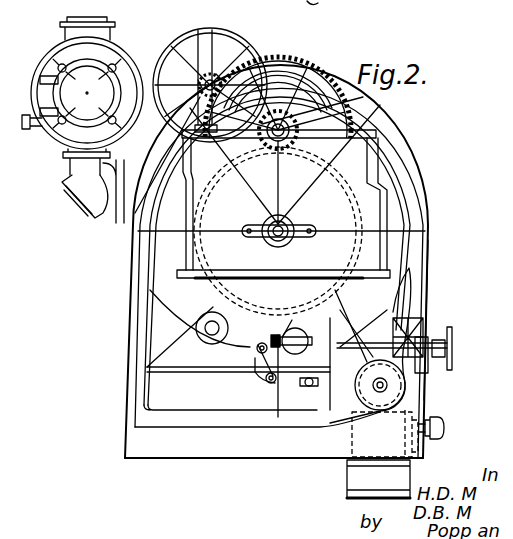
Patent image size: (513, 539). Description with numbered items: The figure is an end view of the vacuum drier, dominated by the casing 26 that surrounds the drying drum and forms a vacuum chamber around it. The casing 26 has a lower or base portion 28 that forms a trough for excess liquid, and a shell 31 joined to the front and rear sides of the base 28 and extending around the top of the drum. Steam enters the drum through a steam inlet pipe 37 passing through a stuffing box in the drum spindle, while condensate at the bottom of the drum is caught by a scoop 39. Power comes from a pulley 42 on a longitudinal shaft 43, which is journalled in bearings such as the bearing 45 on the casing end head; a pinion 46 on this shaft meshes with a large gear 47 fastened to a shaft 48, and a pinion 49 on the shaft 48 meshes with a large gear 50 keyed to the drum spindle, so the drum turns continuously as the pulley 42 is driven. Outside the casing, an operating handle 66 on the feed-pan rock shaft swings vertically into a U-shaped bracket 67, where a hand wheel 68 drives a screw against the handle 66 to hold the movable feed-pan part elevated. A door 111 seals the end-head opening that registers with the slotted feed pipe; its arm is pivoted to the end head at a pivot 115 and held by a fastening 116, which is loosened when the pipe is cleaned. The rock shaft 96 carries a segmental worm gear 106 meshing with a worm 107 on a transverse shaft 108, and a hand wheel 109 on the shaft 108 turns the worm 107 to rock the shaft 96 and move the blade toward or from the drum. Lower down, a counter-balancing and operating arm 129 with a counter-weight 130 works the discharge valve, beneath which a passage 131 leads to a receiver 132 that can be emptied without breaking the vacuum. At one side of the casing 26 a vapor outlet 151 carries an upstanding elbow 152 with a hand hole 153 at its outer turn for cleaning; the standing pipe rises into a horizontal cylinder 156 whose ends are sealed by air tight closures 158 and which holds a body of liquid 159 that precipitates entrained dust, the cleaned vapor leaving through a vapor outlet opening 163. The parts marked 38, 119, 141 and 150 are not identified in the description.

The casing 26 is at (430, 175).
The base portion 28 is at (200, 453).
The shell 31 is at (428, 258).
The steam inlet pipe 37 is at (268, 242).
The hub 38 is at (290, 242).
The scoop 39 is at (200, 318).
The pulley 42 is at (213, 32).
The longitudinal shaft 43 is at (198, 85).
The bearing 45 is at (219, 77).
The pinion 46 is at (204, 80).
The large gear 47 is at (294, 61).
The shaft 48 is at (288, 136).
The pinion 49 is at (288, 156).
The large gear 50 is at (207, 199).
The operating handle 66 is at (273, 387).
The U-shaped bracket 67 is at (342, 422).
The hand wheel 68 is at (320, 381).
The rock shaft 96 is at (375, 325).
The segmental worm gear 106 is at (364, 334).
The worm 107 is at (415, 363).
The transverse shaft 108 is at (434, 327).
The hand wheel 109 is at (455, 334).
The door 111 is at (306, 348).
The pivot 115 is at (305, 339).
The fastening 116 is at (273, 335).
The link 119 is at (290, 333).
The counter-balancing and operating arm 129 is at (441, 422).
The counter-weight 130 is at (444, 437).
The passage 131 is at (382, 454).
The receiver 132 is at (347, 500).
The pipe 141 is at (328, 8).
The valve 150 is at (45, 48).
The vapor outlet 151 is at (130, 172).
The upstanding elbow 152 is at (70, 174).
The hand hole 153 is at (82, 216).
The horizontal cylinder 156 is at (127, 60).
The air tight closures 158 is at (87, 93).
The body of liquid 159 is at (62, 150).
The vapor outlet opening 163 is at (101, 22).